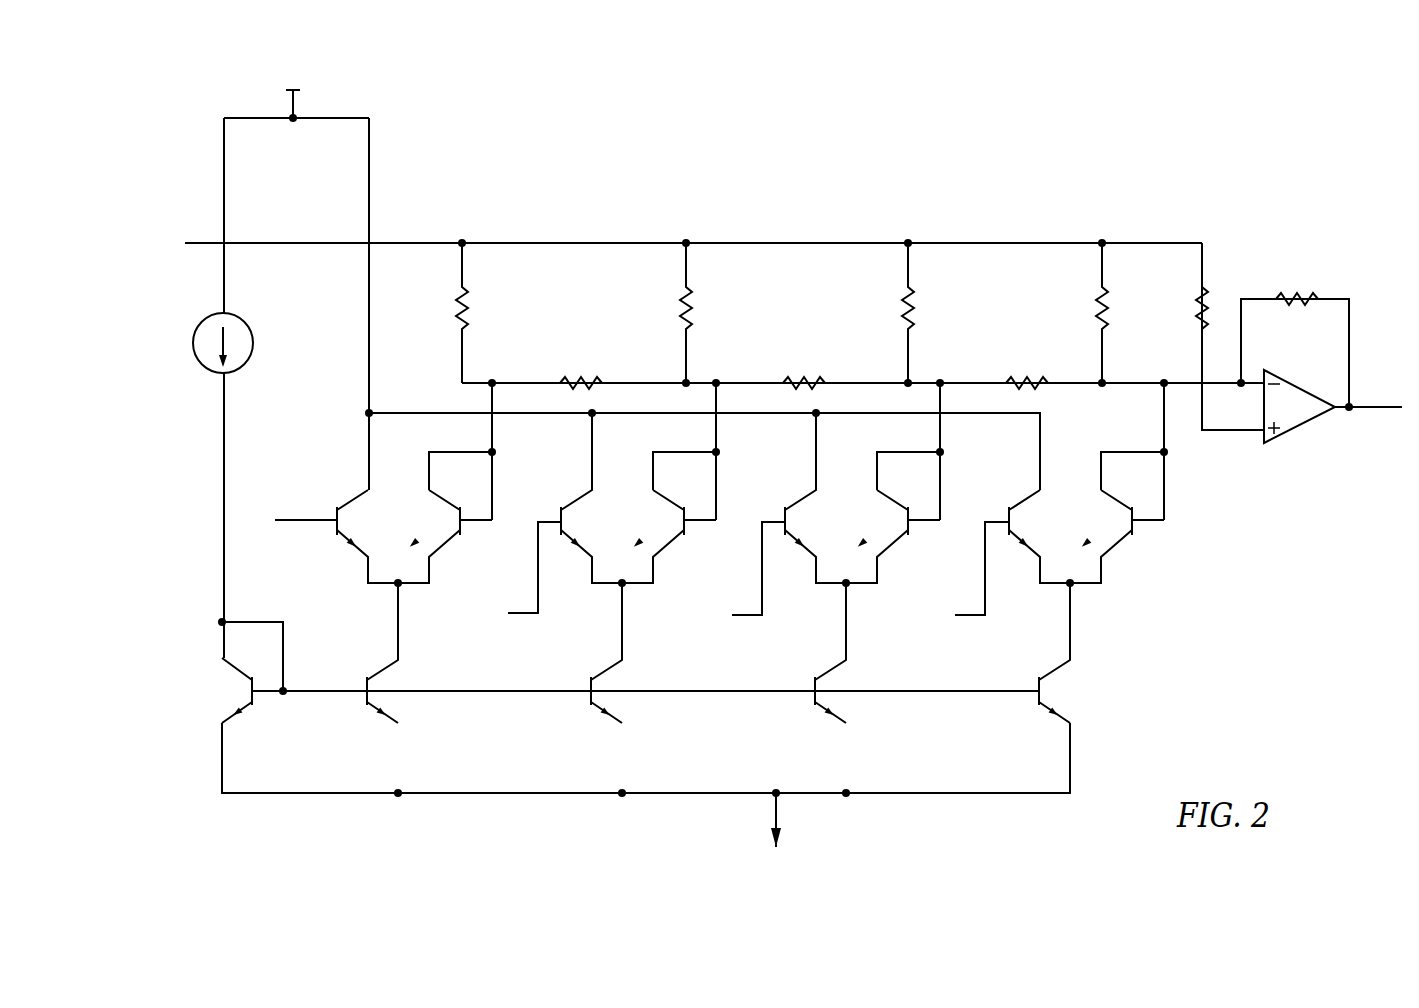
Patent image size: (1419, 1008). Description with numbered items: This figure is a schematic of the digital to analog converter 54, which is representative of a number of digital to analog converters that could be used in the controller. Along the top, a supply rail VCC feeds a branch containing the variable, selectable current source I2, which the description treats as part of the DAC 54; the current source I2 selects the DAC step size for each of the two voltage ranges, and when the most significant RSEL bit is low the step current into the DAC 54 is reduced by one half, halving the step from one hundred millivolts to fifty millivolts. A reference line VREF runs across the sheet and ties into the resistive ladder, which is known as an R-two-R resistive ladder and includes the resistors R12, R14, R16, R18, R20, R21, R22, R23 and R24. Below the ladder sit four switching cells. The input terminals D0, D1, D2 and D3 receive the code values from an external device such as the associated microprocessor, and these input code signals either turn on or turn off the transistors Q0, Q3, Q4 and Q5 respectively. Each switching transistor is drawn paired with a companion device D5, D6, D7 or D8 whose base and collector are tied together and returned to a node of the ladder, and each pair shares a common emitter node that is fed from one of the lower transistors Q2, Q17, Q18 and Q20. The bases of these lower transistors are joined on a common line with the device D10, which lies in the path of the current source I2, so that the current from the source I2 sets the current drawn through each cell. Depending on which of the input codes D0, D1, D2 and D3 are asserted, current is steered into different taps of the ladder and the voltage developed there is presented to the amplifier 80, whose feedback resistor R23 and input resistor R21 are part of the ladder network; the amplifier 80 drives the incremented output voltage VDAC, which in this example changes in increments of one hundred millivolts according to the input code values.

The digital to analog converter 54 is at (808, 182).
The operational amplifier 80 is at (1294, 431).
The resistor R12 is at (472, 303).
The resistor R14 is at (698, 302).
The resistor R16 is at (920, 301).
The resistor R18 is at (1095, 298).
The resistor R20 is at (583, 376).
The resistor R21 is at (1195, 296).
The resistor R22 is at (806, 376).
The resistor R23 is at (1299, 293).
The resistor R24 is at (1029, 377).
The transistor Q0 is at (332, 533).
The current source transistor Q2 is at (388, 667).
The transistor Q3 is at (558, 509).
The transistor Q4 is at (782, 508).
The transistor Q5 is at (1005, 508).
The current source transistor Q17 is at (613, 667).
The current source transistor Q18 is at (838, 669).
The current source transistor Q20 is at (1063, 669).
The diode-connected transistor D5 is at (464, 534).
The diode-connected transistor D6 is at (690, 534).
The diode-connected transistor D7 is at (914, 535).
The diode-connected transistor D8 is at (1137, 535).
The diode-connected transistor D10 is at (258, 704).
The input terminal D0 is at (292, 520).
The input terminal D1 is at (520, 574).
The input terminal D2 is at (744, 575).
The input terminal D3 is at (967, 575).
The supply voltage VCC is at (293, 89).
The reference voltage VREF is at (192, 242).
The output voltage VDAC is at (1378, 403).
The current source I2 is at (203, 368).